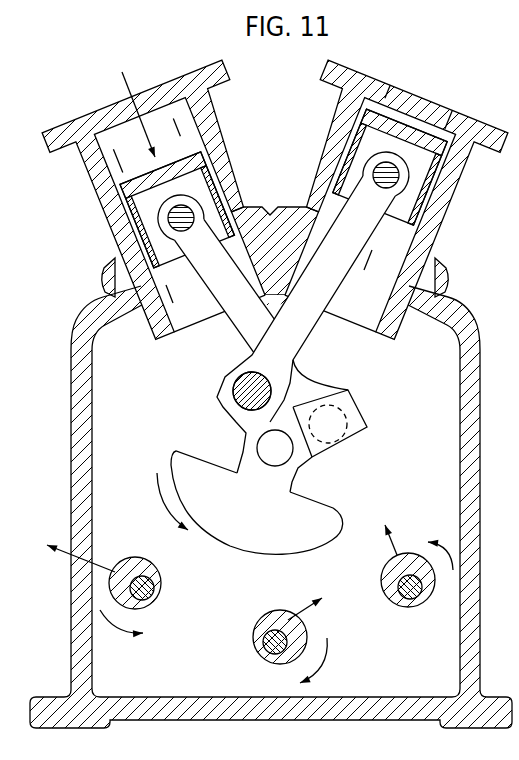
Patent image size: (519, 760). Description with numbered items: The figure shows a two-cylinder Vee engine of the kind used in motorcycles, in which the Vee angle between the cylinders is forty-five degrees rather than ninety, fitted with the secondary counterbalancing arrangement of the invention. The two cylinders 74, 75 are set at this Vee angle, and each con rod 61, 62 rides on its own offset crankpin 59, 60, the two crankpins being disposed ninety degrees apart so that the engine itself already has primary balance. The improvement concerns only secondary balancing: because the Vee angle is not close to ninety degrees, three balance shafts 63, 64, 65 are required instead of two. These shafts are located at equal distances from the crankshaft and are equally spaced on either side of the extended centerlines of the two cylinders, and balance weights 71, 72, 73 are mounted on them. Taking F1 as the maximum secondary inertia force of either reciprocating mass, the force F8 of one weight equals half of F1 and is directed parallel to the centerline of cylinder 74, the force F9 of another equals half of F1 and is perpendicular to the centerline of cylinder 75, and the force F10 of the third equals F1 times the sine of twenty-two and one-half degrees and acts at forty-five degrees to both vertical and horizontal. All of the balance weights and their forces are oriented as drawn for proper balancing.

The cylinder 74 is at (105, 106).
The cylinder 75 is at (440, 126).
The con rod 62 is at (240, 337).
The con rod 61 is at (312, 333).
The offset crankpin 59 is at (233, 397).
The offset crankpin 60 is at (348, 428).
The balance weight 71 is at (137, 556).
The balance shaft 63 is at (163, 593).
The balance weight 72 is at (268, 610).
The balance shaft 64 is at (263, 647).
The balance weight 73 is at (387, 601).
The balance shaft 65 is at (415, 602).
The maximum secondary inertia force F1 is at (129, 97).
The balance weight force F8 is at (383, 524).
The balance weight force F9 is at (68, 550).
The balance weight force F10 is at (322, 595).